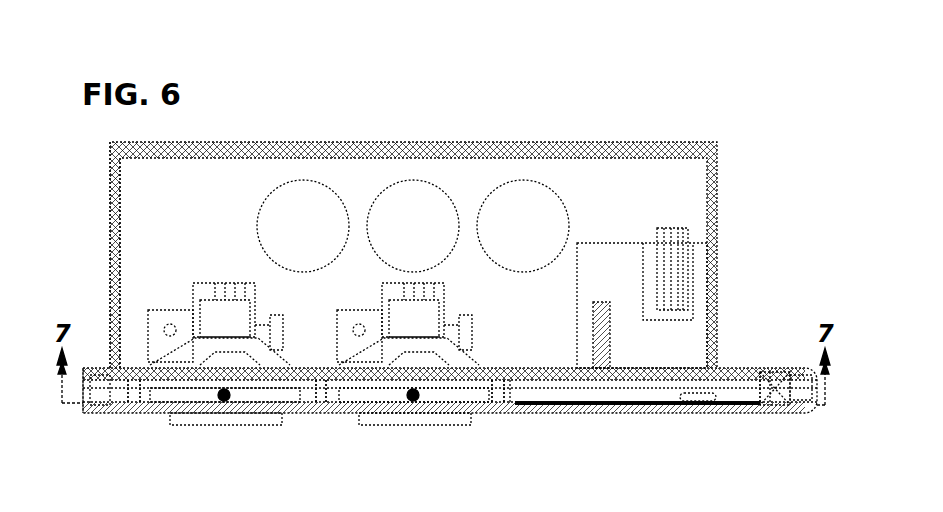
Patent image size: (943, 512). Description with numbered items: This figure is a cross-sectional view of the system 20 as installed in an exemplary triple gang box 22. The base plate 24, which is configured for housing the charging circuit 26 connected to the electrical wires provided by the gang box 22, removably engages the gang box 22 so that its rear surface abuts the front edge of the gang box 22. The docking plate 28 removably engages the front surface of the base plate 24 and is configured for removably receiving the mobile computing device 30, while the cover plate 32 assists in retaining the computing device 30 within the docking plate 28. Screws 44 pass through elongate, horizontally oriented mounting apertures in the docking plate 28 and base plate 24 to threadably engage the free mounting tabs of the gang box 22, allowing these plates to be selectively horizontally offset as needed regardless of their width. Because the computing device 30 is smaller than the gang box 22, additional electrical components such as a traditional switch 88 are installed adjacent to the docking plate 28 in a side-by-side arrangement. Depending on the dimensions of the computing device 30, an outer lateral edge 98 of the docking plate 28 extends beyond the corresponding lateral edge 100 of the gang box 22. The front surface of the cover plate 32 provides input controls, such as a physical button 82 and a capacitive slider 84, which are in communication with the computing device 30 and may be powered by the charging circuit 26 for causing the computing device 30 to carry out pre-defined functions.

The system 20 is at (742, 86).
The gang box 22 is at (421, 125).
The lateral edge 100 is at (720, 158).
The docking plate 28 is at (110, 362).
The base plate 24 is at (730, 368).
The charging circuit 26 is at (693, 253).
The screw 44 is at (224, 400).
The outer lateral edge 98 is at (782, 383).
The computing device 30 is at (592, 414).
The cover plate 32 is at (803, 418).
The physical button 82 is at (505, 413).
The capacitive slider 84 is at (128, 412).
The switch 88 is at (257, 420).